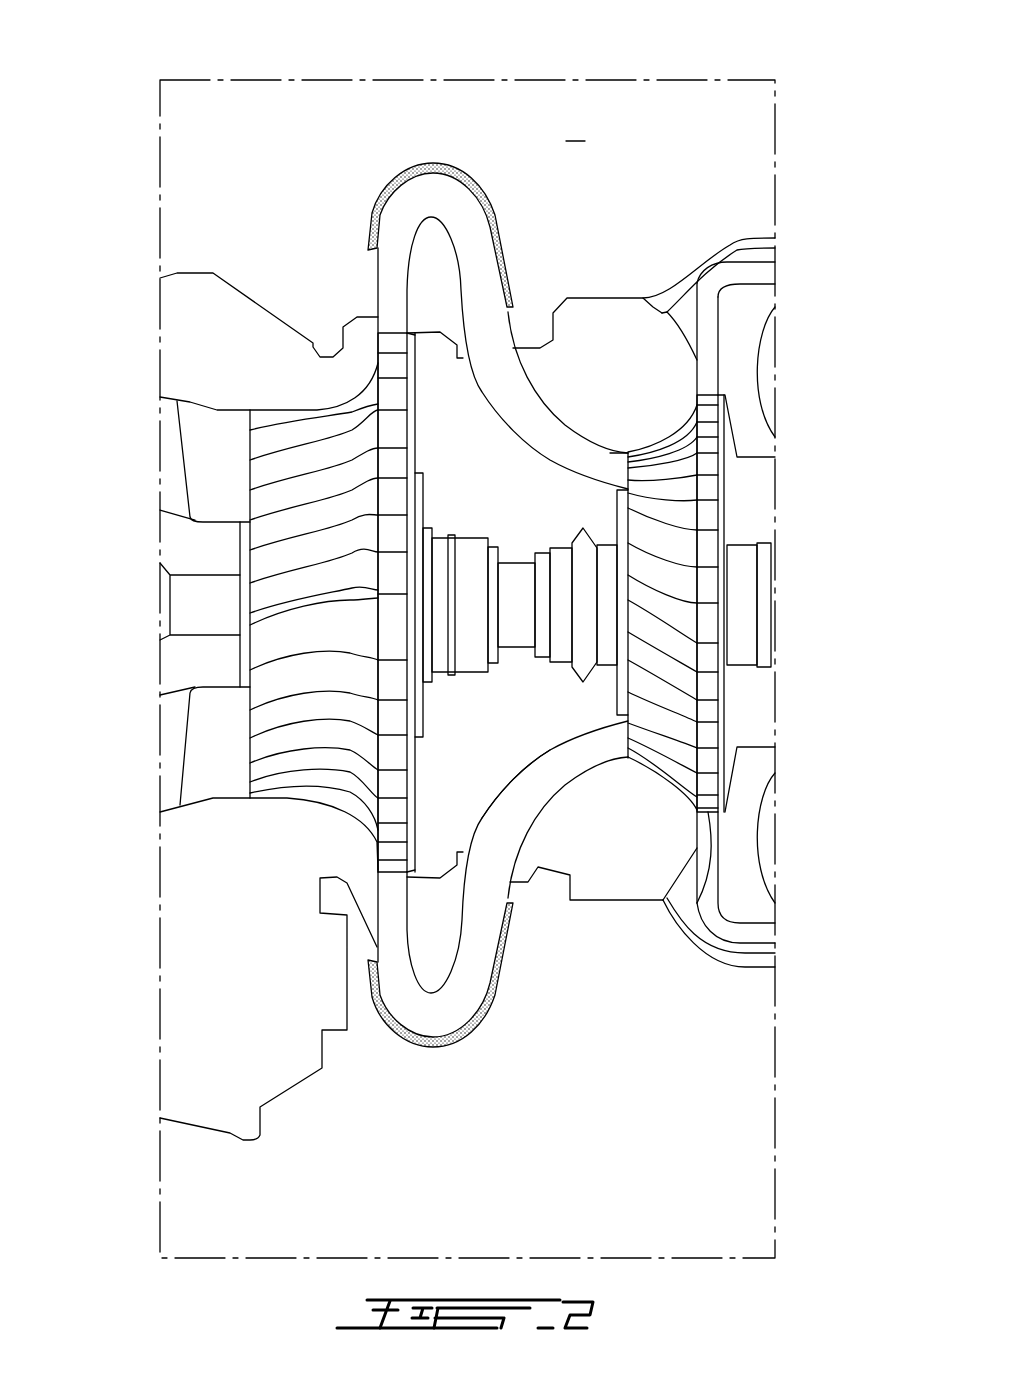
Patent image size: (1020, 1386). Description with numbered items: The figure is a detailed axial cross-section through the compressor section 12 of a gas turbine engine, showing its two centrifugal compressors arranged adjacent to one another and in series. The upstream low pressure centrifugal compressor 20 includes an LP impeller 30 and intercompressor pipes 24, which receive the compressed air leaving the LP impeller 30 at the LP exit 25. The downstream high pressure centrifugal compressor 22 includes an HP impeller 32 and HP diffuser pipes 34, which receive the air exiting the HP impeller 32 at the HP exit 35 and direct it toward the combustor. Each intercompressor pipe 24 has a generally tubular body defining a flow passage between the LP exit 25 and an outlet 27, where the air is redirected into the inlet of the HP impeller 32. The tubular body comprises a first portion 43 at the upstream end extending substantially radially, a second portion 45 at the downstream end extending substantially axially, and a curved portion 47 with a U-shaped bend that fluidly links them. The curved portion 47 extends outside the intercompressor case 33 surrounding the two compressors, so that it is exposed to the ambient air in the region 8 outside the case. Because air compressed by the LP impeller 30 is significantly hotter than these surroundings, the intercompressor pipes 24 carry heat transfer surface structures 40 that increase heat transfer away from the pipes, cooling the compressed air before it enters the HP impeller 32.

The compressor section 12 is at (697, 150).
The region outside the intercompressor case 8 is at (575, 126).
The low pressure centrifugal compressor 20 is at (302, 362).
The high pressure centrifugal compressor 22 is at (665, 418).
The intercompressor pipes 24 is at (472, 148).
The LP exit 25 is at (395, 333).
The outlet 27 is at (640, 467).
The LP impeller 30 is at (300, 797).
The HP impeller 32 is at (657, 763).
The intercompressor case 33 is at (605, 298).
The HP diffuser pipes 34 is at (755, 933).
The HP exit 35 is at (697, 903).
The heat transfer surface structures 40 is at (388, 172).
The first portion 43 is at (393, 900).
The second portion 45 is at (590, 740).
The curved portion 47 is at (438, 197).